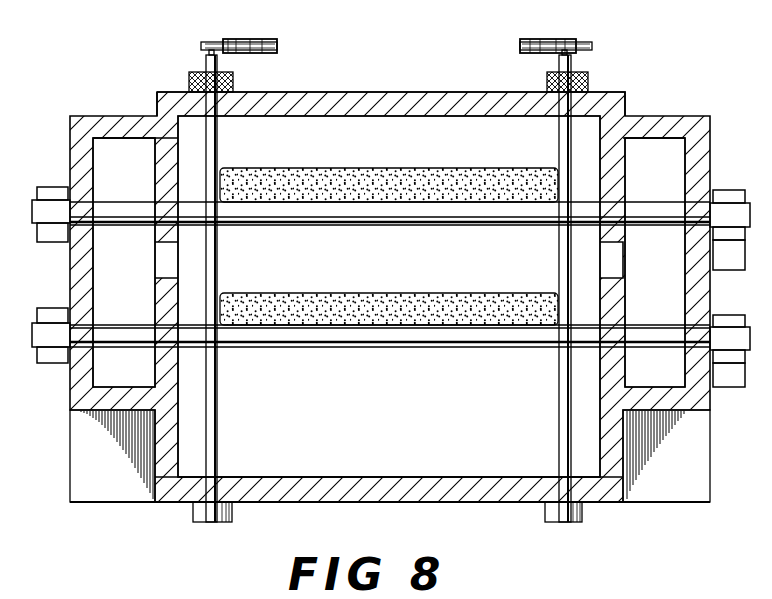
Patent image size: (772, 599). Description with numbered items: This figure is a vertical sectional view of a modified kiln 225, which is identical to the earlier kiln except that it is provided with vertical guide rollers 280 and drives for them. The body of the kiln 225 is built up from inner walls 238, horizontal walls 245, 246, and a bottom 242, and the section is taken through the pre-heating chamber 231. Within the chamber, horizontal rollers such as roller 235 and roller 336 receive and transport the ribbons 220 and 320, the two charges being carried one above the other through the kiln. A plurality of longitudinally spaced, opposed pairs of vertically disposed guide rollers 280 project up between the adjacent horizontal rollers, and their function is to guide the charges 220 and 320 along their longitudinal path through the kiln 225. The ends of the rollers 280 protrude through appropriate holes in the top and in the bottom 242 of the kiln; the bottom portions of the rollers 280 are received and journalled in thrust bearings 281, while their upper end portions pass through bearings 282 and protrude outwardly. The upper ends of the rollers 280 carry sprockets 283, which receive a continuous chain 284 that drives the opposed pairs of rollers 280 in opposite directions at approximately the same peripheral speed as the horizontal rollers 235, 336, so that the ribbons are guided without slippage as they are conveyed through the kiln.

The ribbon 220 is at (477, 298).
The kiln 225 is at (398, 92).
The pre-heating chamber 231 is at (456, 123).
The roller 235 is at (404, 344).
The inner walls 238 is at (158, 186).
The bottom 242 is at (292, 500).
The horizontal wall 245 is at (122, 118).
The horizontal wall 246 is at (110, 408).
The vertical guide roller 280 is at (215, 372).
The thrust bearing 281 is at (212, 514).
The bearing 282 is at (195, 73).
The sprocket 283 is at (215, 42).
The continuous chain 284 is at (268, 40).
The ribbon 320 is at (446, 172).
The roller 336 is at (485, 222).